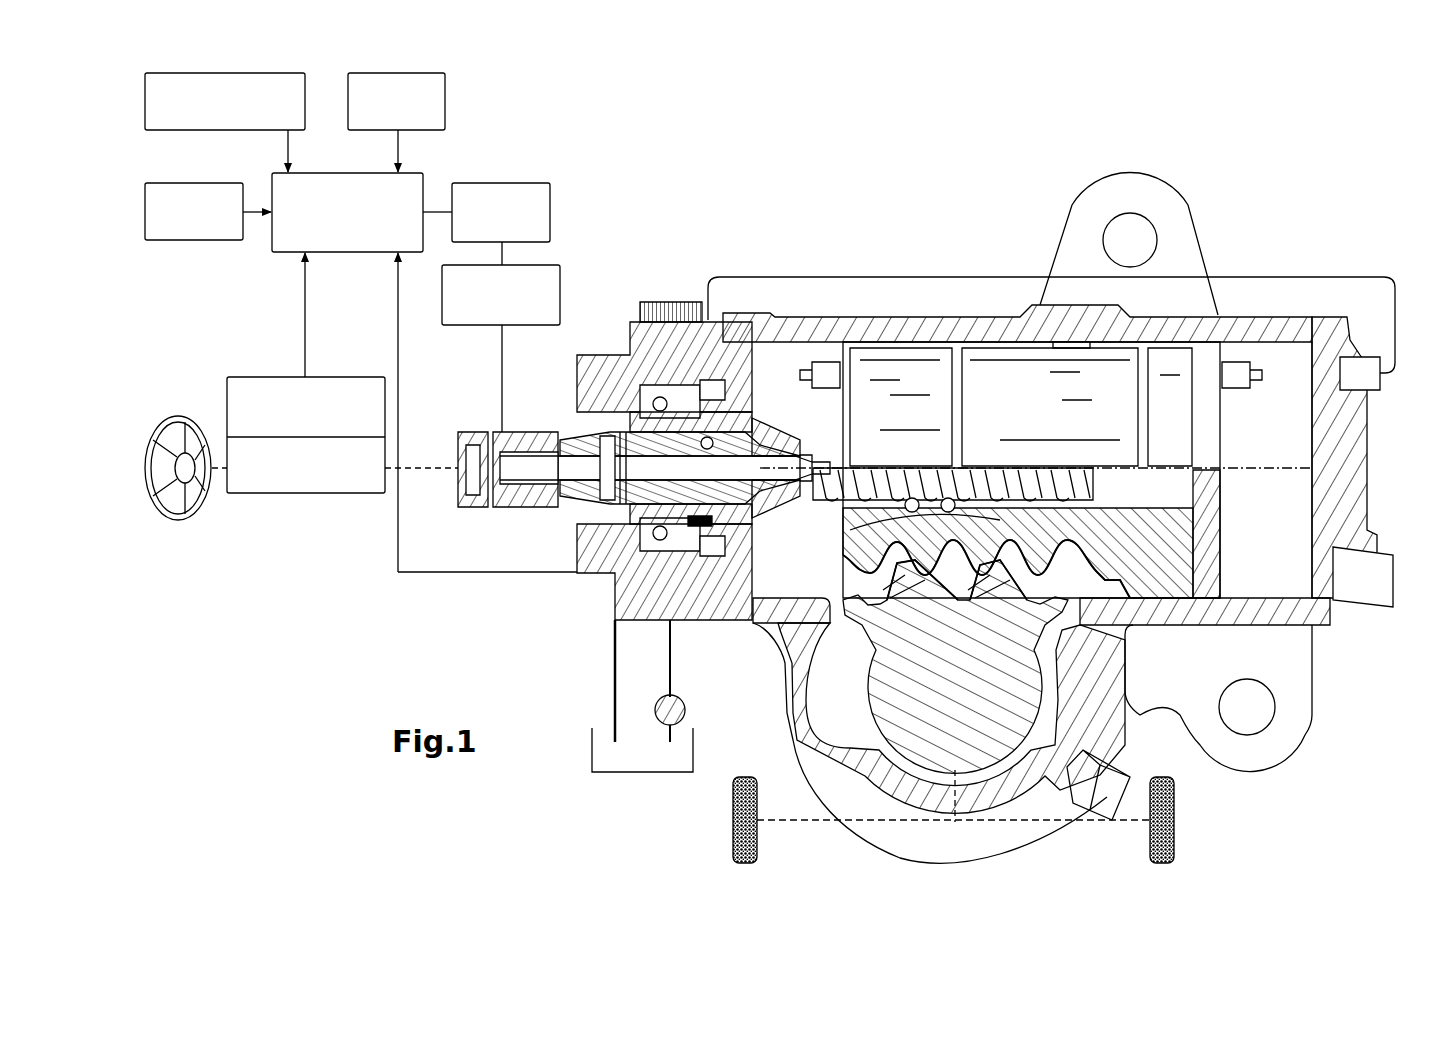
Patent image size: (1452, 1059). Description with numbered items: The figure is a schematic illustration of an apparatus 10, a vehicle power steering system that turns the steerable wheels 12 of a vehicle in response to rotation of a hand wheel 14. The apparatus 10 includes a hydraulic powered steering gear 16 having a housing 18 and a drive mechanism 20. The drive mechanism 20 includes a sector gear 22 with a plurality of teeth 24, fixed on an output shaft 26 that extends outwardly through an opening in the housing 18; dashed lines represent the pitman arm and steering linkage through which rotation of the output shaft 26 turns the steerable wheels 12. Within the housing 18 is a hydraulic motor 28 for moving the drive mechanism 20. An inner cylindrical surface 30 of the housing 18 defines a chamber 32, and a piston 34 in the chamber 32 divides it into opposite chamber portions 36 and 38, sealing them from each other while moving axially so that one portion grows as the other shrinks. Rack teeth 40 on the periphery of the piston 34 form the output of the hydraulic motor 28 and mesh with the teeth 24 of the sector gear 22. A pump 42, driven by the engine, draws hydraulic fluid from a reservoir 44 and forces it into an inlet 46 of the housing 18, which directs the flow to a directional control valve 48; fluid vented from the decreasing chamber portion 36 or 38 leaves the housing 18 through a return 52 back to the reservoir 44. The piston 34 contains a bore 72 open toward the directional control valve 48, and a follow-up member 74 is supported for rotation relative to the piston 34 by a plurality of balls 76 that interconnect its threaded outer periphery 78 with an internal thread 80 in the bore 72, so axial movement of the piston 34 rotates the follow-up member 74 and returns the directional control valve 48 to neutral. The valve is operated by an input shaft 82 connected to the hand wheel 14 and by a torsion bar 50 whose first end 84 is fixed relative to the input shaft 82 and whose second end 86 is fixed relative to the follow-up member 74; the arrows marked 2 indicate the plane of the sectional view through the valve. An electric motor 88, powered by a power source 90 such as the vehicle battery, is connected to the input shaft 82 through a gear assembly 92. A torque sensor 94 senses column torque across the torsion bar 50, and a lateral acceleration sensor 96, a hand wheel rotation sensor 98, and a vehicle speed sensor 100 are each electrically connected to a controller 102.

The section line 2 is at (757, 388).
The apparatus 10 is at (722, 226).
The steerable wheels 12 is at (733, 838).
The hand wheel 14 is at (178, 520).
The hydraulic powered steering gear 16 is at (816, 266).
The housing 18 is at (1340, 467).
The drive mechanism 20 is at (864, 695).
The sector gear 22 is at (1046, 652).
The teeth 24 is at (1000, 570).
The output shaft 26 is at (907, 691).
The hydraulic motor 28 is at (887, 355).
The inner cylindrical surface 30 is at (1283, 602).
The chamber 32 is at (1284, 390).
The piston 34 is at (1195, 560).
The chamber portion 36 is at (790, 352).
The chamber portion 38 is at (1275, 425).
The rack teeth 40 is at (885, 575).
The pump 42 is at (686, 710).
The reservoir 44 is at (693, 735).
The inlet 46 is at (696, 612).
The directional control valve 48 is at (716, 434).
The torsion bar 50 is at (545, 492).
The return 52 is at (616, 580).
The bore 72 is at (1180, 510).
The follow-up member 74 is at (1085, 490).
The balls 76 is at (908, 498).
The outer periphery 78 is at (945, 498).
The internal thread 80 is at (960, 520).
The input shaft 82 is at (486, 507).
The first end 84 is at (512, 462).
The second end 86 is at (803, 480).
The electric motor 88 is at (522, 183).
The power source 90 is at (184, 240).
The gear assembly 92 is at (558, 279).
The torque sensor 94 is at (695, 520).
The lateral acceleration sensor 96 is at (222, 130).
The hand wheel rotation sensor 98 is at (227, 436).
The vehicle speed sensor 100 is at (440, 102).
The controller 102 is at (285, 243).